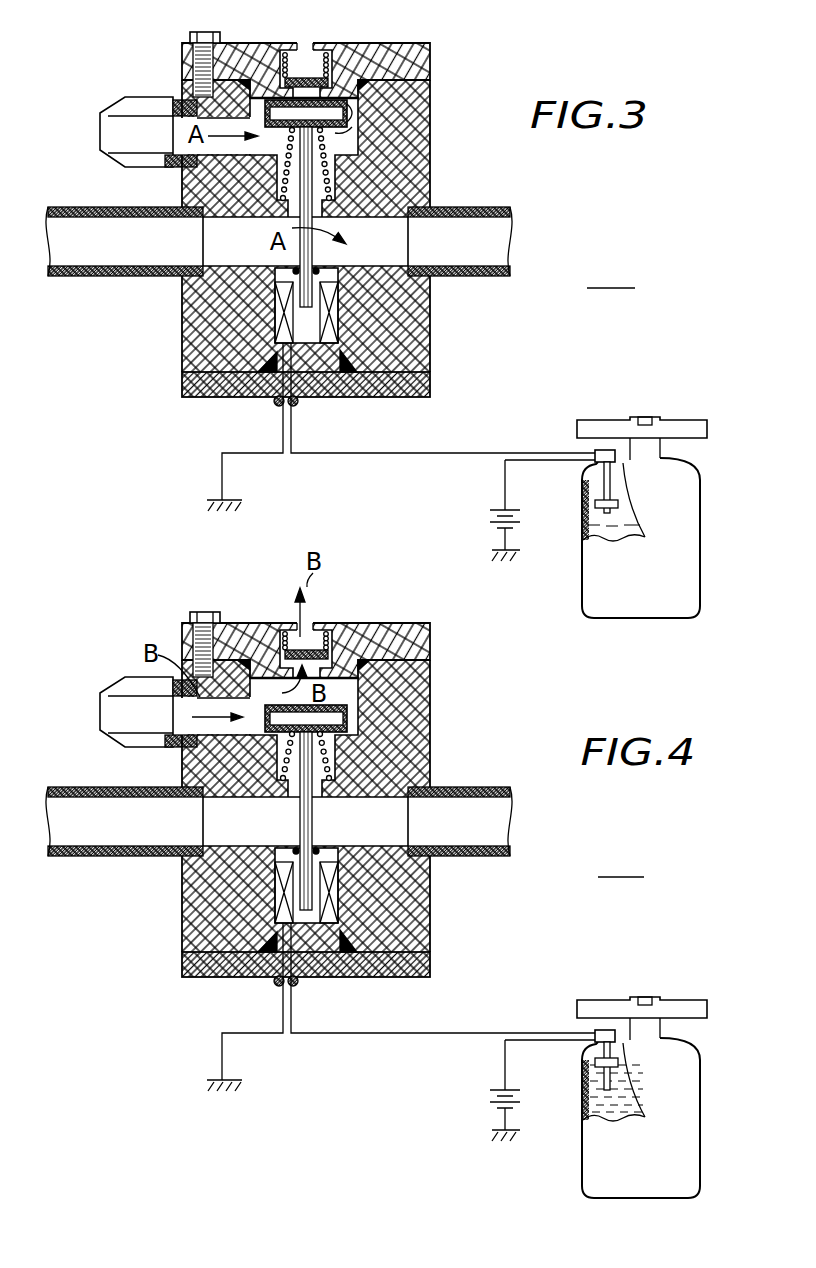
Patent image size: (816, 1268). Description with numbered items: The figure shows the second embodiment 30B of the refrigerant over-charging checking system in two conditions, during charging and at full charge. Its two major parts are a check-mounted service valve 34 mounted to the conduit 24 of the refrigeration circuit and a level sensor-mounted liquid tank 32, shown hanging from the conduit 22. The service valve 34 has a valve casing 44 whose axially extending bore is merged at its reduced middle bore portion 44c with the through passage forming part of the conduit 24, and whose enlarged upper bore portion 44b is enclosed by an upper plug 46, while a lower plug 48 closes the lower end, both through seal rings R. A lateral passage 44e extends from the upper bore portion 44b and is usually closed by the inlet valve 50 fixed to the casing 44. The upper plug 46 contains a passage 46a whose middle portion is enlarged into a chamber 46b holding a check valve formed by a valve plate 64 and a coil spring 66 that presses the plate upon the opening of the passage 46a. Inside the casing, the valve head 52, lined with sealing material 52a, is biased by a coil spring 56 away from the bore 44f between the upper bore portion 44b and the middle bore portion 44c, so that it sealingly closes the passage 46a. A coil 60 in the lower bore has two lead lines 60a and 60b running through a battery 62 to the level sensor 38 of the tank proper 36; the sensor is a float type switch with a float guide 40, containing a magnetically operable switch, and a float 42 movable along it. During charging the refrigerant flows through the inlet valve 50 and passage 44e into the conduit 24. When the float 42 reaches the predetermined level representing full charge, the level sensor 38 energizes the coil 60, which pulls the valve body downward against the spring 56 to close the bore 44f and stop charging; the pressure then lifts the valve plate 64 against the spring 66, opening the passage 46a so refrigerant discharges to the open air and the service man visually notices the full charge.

In FIG. 3, the conduit 22 is at (680, 427).
In FIG. 4, the conduit 22 is at (642, 984).
In FIG. 3, the conduit 24 is at (85, 275).
In FIG. 4, the conduit 24 is at (279, 848).
In FIG. 3, the second embodiment 30B is at (611, 276).
In FIG. 4, the second embodiment 30B is at (621, 863).
In FIG. 3, the level sensor-mounted liquid tank 32 is at (640, 494).
In FIG. 4, the level sensor-mounted liquid tank 32 is at (660, 1069).
In FIG. 3, the check-mounted service valve 34 is at (464, 88).
In FIG. 4, the check-mounted service valve 34 is at (368, 805).
In FIG. 3, the tank proper 36 is at (673, 557).
In FIG. 3, the level sensor 38 is at (607, 436).
In FIG. 4, the level sensor 38 is at (594, 991).
In FIG. 3, the float guide 40 is at (610, 488).
In FIG. 4, the float guide 40 is at (644, 1080).
In FIG. 3, the float 42 is at (594, 503).
In FIG. 4, the float 42 is at (635, 1057).
In FIG. 3, the valve casing 44 is at (190, 320).
In FIG. 3, the enlarged upper bore portion 44b is at (350, 113).
In FIG. 3, the reduced middle bore portion 44c is at (335, 235).
In FIG. 4, the reduced middle bore portion 44c is at (306, 821).
In FIG. 3, the passage 44e is at (200, 118).
In FIG. 4, the passage 44e is at (147, 710).
In FIG. 3, the bore 44f is at (330, 175).
In FIG. 3, the upper plug 46 is at (388, 60).
In FIG. 3, the passage 46a is at (358, 100).
In FIG. 3, the chamber 46b is at (320, 50).
In FIG. 4, the chamber 46b is at (346, 634).
In FIG. 3, the lower plug 48 is at (417, 385).
In FIG. 3, the inlet valve 50 is at (145, 105).
In FIG. 4, the inlet valve 50 is at (145, 686).
In FIG. 3, the valve head 52 is at (345, 115).
In FIG. 4, the valve head 52 is at (367, 727).
In FIG. 3, the sealing material 52a is at (350, 133).
In FIG. 3, the coil spring 56 is at (287, 173).
In FIG. 4, the coil spring 56 is at (385, 756).
In FIG. 3, the coil 60 is at (335, 318).
In FIG. 4, the coil 60 is at (378, 885).
In FIG. 3, the lead line 60a is at (348, 450).
In FIG. 4, the lead line 60a is at (443, 978).
In FIG. 3, the lead line 60b is at (262, 455).
In FIG. 4, the lead line 60b is at (255, 1007).
In FIG. 3, the battery 62 is at (487, 517).
In FIG. 4, the battery 62 is at (511, 1090).
In FIG. 3, the valve plate 64 is at (305, 77).
In FIG. 4, the valve plate 64 is at (322, 617).
In FIG. 3, the coil spring 66 is at (290, 50).
In FIG. 4, the coil spring 66 is at (283, 613).
In FIG. 3, the seal ring R is at (363, 88).